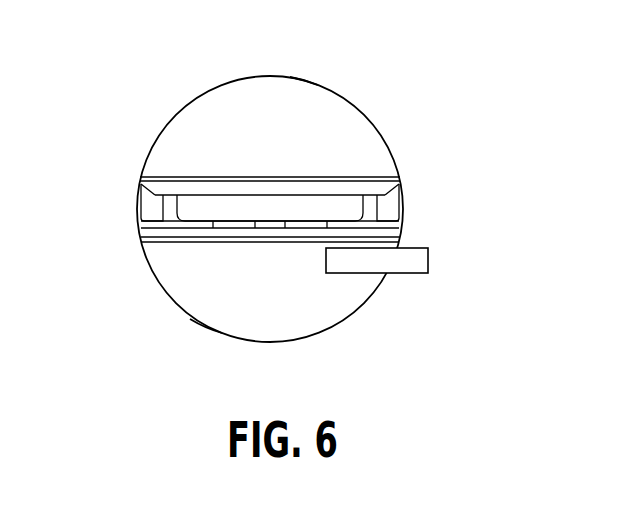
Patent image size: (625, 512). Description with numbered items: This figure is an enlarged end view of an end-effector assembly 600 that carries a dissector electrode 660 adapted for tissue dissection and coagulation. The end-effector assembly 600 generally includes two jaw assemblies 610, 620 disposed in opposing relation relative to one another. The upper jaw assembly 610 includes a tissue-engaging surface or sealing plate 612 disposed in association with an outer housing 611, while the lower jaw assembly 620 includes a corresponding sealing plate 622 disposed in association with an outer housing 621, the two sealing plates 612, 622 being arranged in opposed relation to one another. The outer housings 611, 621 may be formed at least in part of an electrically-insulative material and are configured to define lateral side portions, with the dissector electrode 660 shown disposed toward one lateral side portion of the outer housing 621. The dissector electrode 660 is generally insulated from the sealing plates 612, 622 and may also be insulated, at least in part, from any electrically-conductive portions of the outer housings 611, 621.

The end-effector assembly 600 is at (162, 40).
The jaw assembly 610 is at (379, 119).
The outer housing 611 is at (304, 80).
The sealing plate 612 is at (391, 190).
The jaw assembly 620 is at (152, 306).
The outer housing 621 is at (206, 328).
The sealing plate 622 is at (152, 239).
The dissector electrode 660 is at (420, 262).